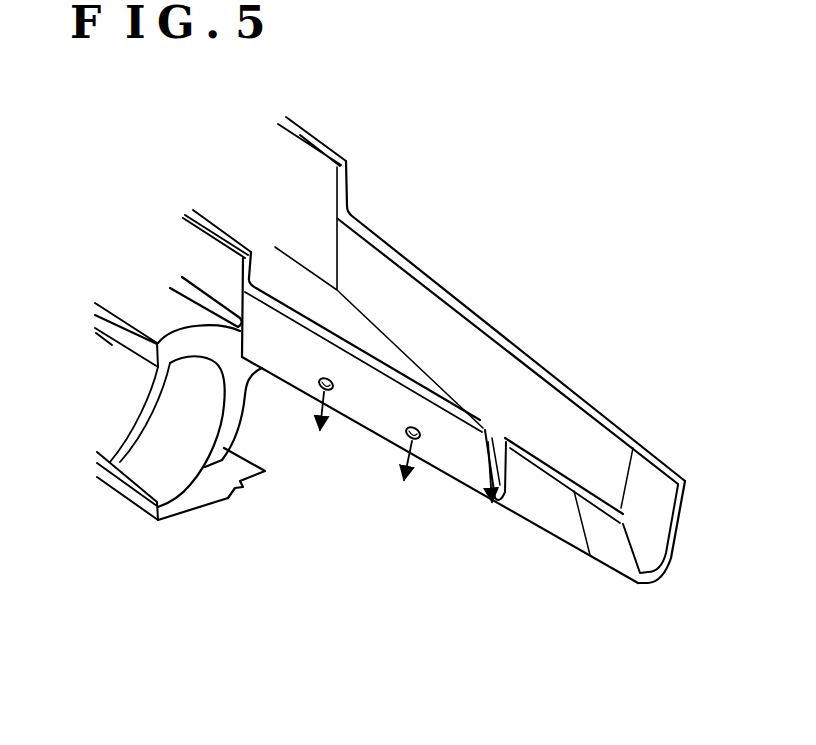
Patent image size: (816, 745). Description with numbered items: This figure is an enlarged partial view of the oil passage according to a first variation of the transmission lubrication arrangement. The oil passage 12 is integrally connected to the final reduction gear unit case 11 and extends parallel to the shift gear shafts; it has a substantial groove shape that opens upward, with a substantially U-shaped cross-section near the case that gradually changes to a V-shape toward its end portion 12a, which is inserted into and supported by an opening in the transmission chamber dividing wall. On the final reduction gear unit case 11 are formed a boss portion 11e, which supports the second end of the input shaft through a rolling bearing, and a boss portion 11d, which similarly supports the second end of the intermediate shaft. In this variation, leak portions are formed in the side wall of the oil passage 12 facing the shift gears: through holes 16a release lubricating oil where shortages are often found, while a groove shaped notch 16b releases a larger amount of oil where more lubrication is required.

The final reduction gear unit case 11 is at (148, 264).
The boss portion 11d is at (238, 477).
The boss portion 11e is at (237, 398).
The oil passage 12 is at (457, 303).
The end portion 12a is at (658, 466).
The through hole 16a is at (315, 381).
The groove shaped notch 16b is at (497, 526).